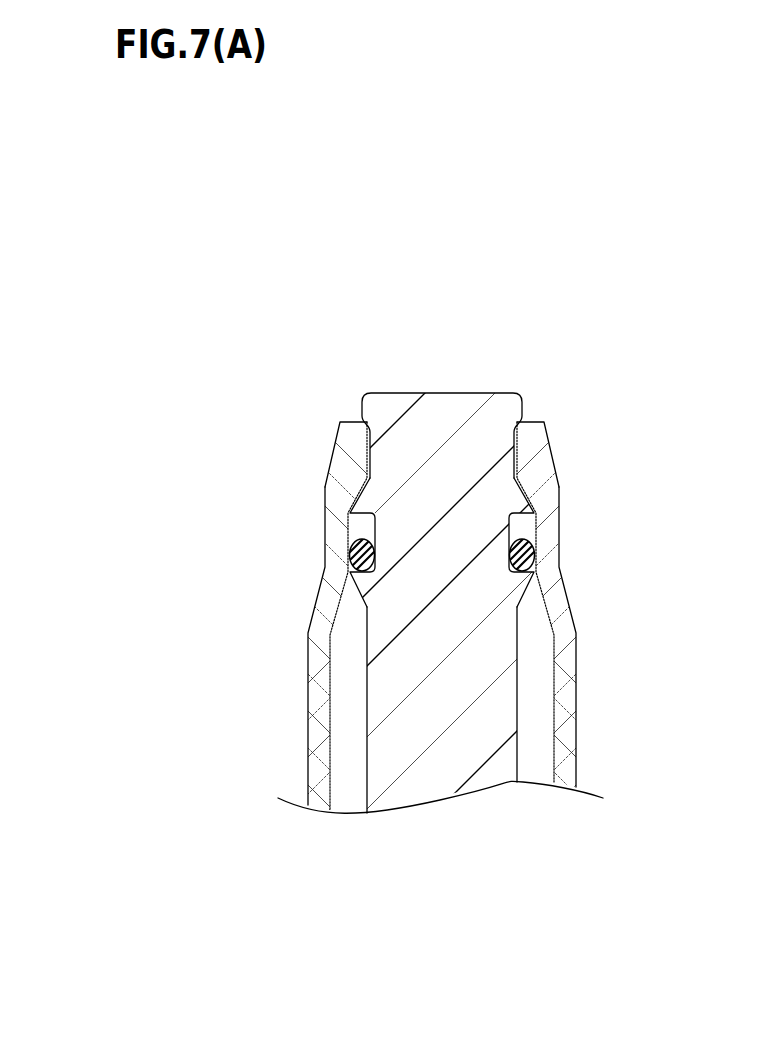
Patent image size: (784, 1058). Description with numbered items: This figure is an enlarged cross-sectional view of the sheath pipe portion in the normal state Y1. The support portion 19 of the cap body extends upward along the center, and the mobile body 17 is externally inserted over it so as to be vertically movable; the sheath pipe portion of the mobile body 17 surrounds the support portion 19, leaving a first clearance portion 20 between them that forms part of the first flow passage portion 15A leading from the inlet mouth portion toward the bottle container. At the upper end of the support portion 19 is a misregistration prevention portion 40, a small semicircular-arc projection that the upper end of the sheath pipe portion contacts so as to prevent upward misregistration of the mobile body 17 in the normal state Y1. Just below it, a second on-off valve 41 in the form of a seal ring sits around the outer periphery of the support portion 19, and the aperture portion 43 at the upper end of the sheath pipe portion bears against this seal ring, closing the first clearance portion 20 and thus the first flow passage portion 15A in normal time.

The support portion 19 is at (448, 755).
The misregistration prevention portion 40 is at (362, 405).
The mobile body 17 is at (577, 702).
The aperture portion 43 is at (327, 543).
The first flow passage portion 15A is at (352, 683).
The first clearance portion 20 is at (352, 750).
The second on-off valve 41 is at (532, 555).
The normal state Y1 is at (515, 335).